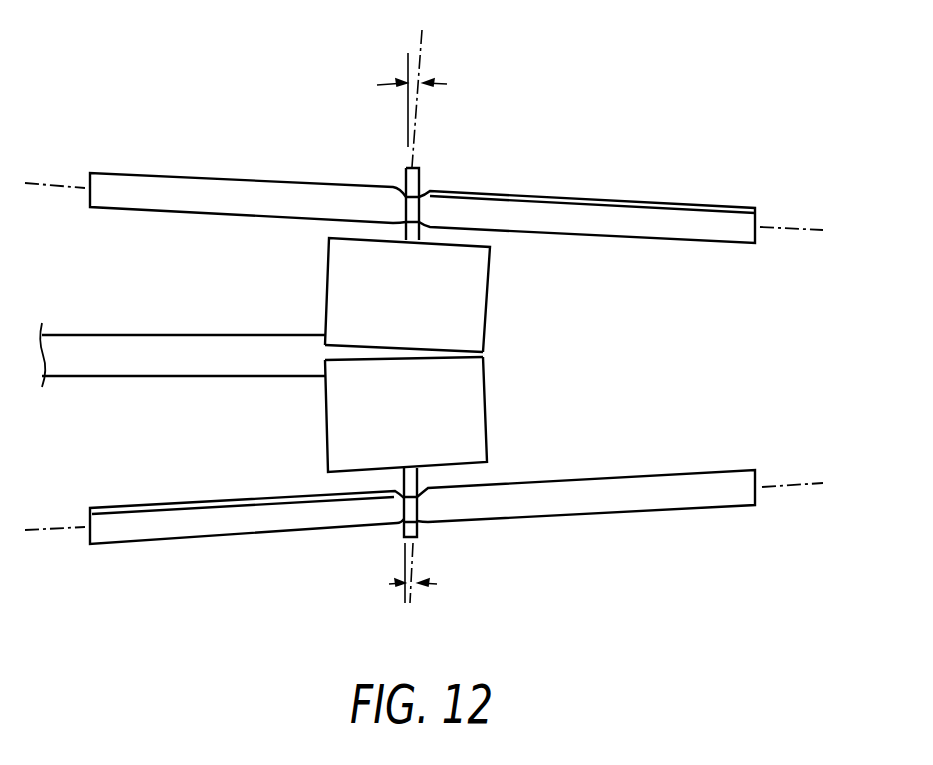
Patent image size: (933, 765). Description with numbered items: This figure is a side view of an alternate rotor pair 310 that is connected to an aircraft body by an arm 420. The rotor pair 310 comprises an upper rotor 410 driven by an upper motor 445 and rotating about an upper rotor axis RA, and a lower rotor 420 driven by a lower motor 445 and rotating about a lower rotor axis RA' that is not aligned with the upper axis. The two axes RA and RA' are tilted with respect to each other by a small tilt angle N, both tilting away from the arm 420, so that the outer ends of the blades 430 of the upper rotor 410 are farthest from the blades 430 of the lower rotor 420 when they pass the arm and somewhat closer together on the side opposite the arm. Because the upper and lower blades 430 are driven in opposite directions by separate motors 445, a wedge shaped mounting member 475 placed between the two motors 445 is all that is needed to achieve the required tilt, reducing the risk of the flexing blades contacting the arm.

The rotor pair 310 is at (700, 134).
The upper rotor 410 is at (723, 227).
The lower rotor 420 is at (77, 333).
The blades 430 is at (152, 188).
The motor 445 is at (488, 292).
The wedge shaped mounting member 475 is at (360, 387).